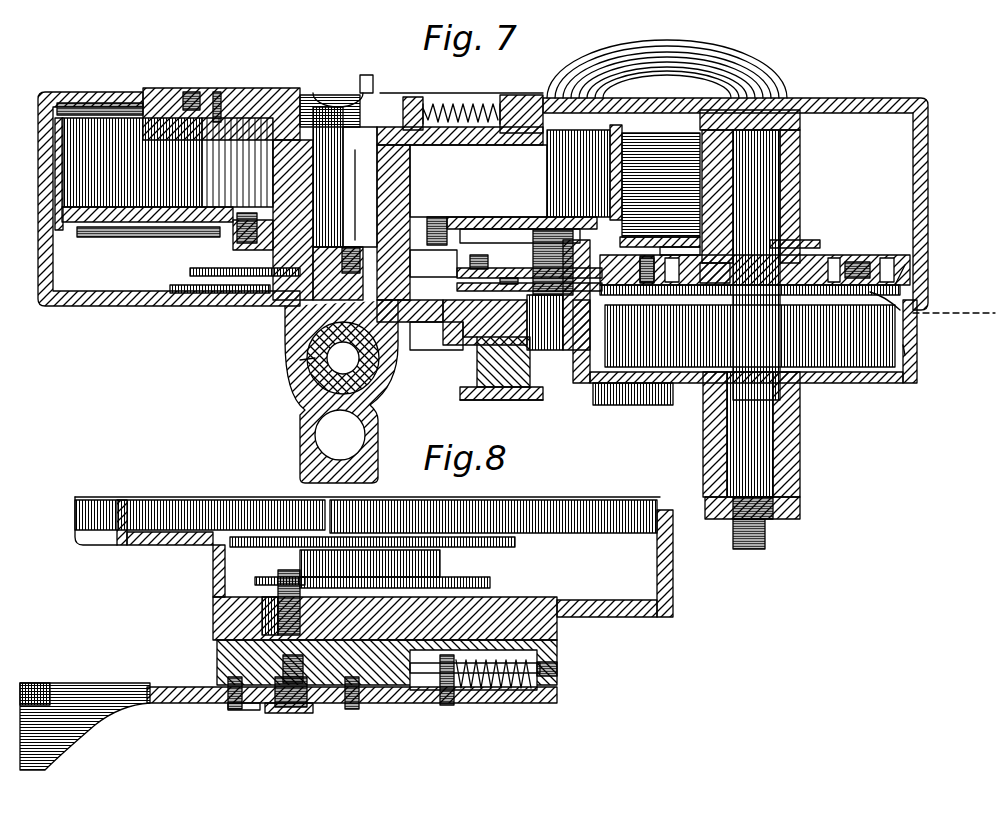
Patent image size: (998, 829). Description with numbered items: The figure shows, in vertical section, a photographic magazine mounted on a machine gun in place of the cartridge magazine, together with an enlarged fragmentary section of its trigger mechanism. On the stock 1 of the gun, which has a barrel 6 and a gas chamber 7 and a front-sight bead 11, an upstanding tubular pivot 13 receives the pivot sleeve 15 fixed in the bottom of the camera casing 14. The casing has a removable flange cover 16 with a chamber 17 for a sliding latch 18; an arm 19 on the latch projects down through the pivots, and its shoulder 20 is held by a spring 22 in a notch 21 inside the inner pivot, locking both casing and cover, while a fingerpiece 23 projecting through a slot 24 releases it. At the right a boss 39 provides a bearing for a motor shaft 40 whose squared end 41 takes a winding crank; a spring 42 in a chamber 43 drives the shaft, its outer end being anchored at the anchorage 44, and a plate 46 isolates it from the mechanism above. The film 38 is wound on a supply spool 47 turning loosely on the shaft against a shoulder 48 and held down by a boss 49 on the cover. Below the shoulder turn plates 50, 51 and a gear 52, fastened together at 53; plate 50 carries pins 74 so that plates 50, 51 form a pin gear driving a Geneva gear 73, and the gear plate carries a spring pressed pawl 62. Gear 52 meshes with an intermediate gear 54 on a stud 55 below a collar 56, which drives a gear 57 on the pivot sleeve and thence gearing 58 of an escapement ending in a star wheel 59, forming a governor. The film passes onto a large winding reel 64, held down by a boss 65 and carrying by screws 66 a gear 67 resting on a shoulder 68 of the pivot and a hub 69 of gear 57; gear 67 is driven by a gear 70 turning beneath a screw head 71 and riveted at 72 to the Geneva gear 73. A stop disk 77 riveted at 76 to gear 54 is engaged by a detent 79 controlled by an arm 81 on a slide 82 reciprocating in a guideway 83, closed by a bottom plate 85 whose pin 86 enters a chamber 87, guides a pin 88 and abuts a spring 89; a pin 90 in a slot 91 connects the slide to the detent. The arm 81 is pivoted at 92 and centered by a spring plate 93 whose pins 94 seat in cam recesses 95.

In FIG. 7, the stock 1 is at (300, 360).
In FIG. 7, the barrel 6 is at (335, 365).
In FIG. 7, the gas chamber 7 is at (362, 428).
In FIG. 7, the bead 11 is at (779, 295).
In FIG. 7, the tubular pivot 13 is at (440, 170).
In FIG. 7, the camera casing 14 is at (62, 300).
In FIG. 8, the camera casing 14 is at (652, 612).
In FIG. 7, the pivot sleeve 15 is at (415, 145).
In FIG. 7, the flange cover 16 is at (878, 102).
In FIG. 7, the chamber 17 is at (465, 103).
In FIG. 7, the sliding latch 18 is at (288, 100).
In FIG. 7, the arm 19 is at (310, 188).
In FIG. 7, the shoulder 20 is at (338, 276).
In FIG. 7, the notch 21 is at (290, 332).
In FIG. 7, the spring 22 is at (505, 100).
In FIG. 7, the fingerpiece 23 is at (385, 95).
In FIG. 7, the slot 24 is at (350, 95).
In FIG. 7, the film 38 is at (820, 160).
In FIG. 7, the boss 39 is at (802, 420).
In FIG. 7, the motor shaft 40 is at (745, 412).
In FIG. 7, the squared end 41 is at (765, 536).
In FIG. 7, the spring 42 is at (892, 345).
In FIG. 7, the chamber 43 is at (905, 355).
In FIG. 7, the coil end 44 is at (618, 390).
In FIG. 7, the plate 46 is at (900, 310).
In FIG. 7, the supply spool 47 is at (820, 242).
In FIG. 7, the shoulder 48 is at (709, 262).
In FIG. 7, the boss 49 is at (790, 105).
In FIG. 7, the plate 50 is at (860, 262).
In FIG. 7, the plate 51 is at (870, 268).
In FIG. 7, the gear 52 is at (858, 288).
In FIG. 7, the fastening 53 is at (836, 258).
In FIG. 7, the intermediate gear 54 is at (470, 270).
In FIG. 7, the stud 55 is at (452, 322).
In FIG. 7, the collar 56 is at (545, 275).
In FIG. 7, the gear 57 is at (440, 290).
In FIG. 8, the gear 57 is at (462, 585).
In FIG. 7, the gearing 58 is at (200, 268).
In FIG. 7, the star wheel 59 is at (172, 287).
In FIG. 8, the pawl 62 is at (385, 643).
In FIG. 7, the winding reel 64 is at (108, 230).
In FIG. 8, the winding reel 64 is at (190, 500).
In FIG. 7, the boss 65 is at (280, 140).
In FIG. 7, the screws 66 is at (442, 217).
In FIG. 7, the gear 67 is at (225, 248).
In FIG. 8, the gear 67 is at (515, 543).
In FIG. 7, the shoulder 68 is at (438, 215).
In FIG. 7, the hub 69 is at (433, 263).
In FIG. 7, the gear 70 is at (620, 250).
In FIG. 7, the screw head 71 is at (528, 228).
In FIG. 7, the rivets 72 is at (628, 236).
In FIG. 7, the Geneva gear 73 is at (655, 262).
In FIG. 7, the pins 74 is at (905, 265).
In FIG. 7, the rivets 76 is at (505, 280).
In FIG. 7, the stop disk 77 is at (465, 325).
In FIG. 8, the detent 79 is at (265, 587).
In FIG. 8, the arm 81 is at (70, 742).
In FIG. 7, the slide 82 is at (465, 378).
In FIG. 7, the guideway 83 is at (478, 355).
In FIG. 7, the bottom plate 85 is at (535, 392).
In FIG. 8, the bottom plate 85 is at (490, 703).
In FIG. 8, the pin 86 is at (432, 690).
In FIG. 8, the chamber 87 is at (420, 700).
In FIG. 8, the pin 88 is at (520, 690).
In FIG. 8, the spring 89 is at (545, 660).
In FIG. 8, the pin 90 is at (278, 600).
In FIG. 8, the slot 91 is at (268, 625).
In FIG. 8, the pivot 92 is at (288, 710).
In FIG. 8, the spring plate 93 is at (262, 712).
In FIG. 8, the centering pins 94 is at (232, 703).
In FIG. 8, the cam recesses 95 is at (335, 682).